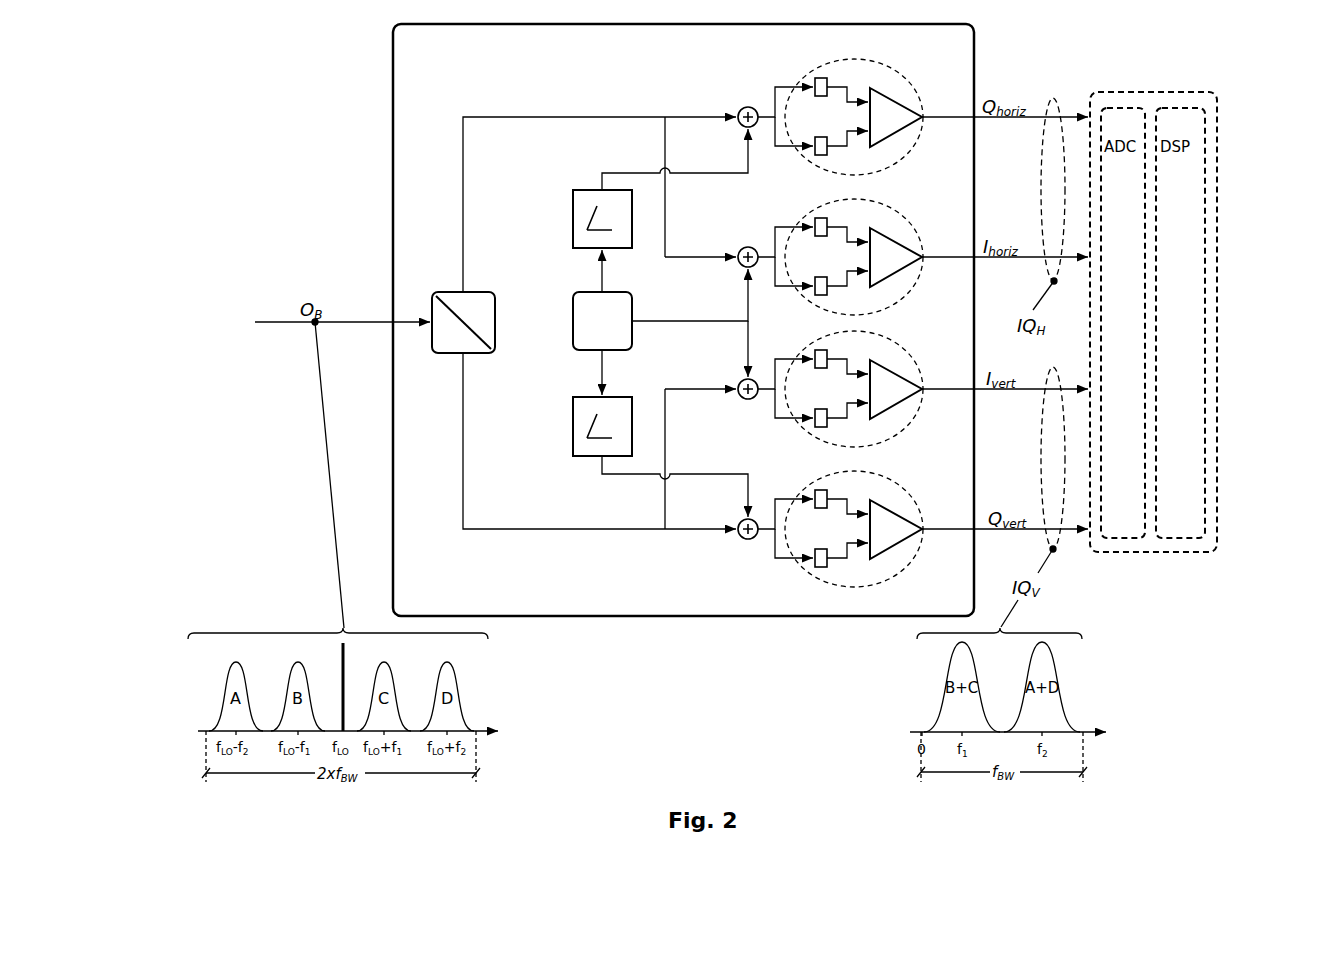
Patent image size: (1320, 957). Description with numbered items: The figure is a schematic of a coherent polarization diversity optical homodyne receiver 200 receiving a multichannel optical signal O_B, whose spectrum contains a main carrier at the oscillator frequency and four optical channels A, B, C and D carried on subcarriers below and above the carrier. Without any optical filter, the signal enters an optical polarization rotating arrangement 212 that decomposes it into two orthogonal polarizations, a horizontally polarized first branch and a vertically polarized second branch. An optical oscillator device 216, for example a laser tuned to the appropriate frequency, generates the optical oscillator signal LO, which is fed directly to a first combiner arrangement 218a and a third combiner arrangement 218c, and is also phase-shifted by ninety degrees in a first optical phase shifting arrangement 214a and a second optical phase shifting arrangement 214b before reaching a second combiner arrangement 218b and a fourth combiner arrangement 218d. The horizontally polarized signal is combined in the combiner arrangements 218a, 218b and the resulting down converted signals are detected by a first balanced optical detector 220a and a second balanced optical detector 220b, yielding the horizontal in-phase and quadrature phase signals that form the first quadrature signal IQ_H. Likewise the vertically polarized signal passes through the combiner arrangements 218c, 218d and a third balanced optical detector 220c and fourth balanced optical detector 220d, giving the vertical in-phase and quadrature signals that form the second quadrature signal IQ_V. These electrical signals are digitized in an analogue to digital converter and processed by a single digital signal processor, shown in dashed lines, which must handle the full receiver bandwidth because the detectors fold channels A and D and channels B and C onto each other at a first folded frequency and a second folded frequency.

The optical homodyne receiver 200 is at (683, 320).
The optical polarization rotating arrangement 212 is at (447, 290).
The first optical phase shifting arrangement 214a is at (586, 188).
The second optical phase shifting arrangement 214b is at (586, 395).
The optical oscillator device 216 is at (586, 290).
The first combiner arrangement 218a is at (748, 245).
The second combiner arrangement 218b is at (748, 105).
The third combiner arrangement 218c is at (748, 401).
The fourth combiner arrangement 218d is at (748, 541).
The first balanced optical detector 220a is at (877, 315).
The second balanced optical detector 220b is at (877, 178).
The third balanced optical detector 220c is at (877, 448).
The fourth balanced optical detector 220d is at (877, 587).